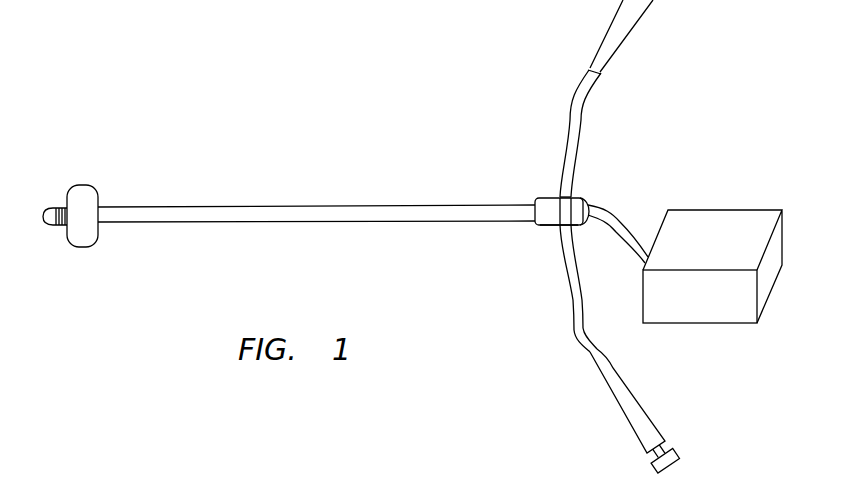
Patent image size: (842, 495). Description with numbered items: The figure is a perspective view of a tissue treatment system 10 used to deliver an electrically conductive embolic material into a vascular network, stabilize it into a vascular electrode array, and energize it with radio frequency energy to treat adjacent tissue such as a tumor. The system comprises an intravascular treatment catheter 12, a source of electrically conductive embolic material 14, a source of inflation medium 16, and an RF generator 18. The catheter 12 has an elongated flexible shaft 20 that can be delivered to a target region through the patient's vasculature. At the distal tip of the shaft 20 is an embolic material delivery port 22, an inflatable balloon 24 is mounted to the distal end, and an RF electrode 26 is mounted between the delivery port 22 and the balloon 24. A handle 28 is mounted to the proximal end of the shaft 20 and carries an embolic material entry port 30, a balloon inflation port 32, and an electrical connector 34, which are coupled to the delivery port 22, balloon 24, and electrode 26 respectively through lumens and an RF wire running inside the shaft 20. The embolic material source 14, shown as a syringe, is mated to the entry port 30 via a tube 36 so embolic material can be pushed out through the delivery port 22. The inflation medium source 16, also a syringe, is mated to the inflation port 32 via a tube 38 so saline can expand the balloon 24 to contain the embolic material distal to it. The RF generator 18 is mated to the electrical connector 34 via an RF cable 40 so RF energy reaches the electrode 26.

The tissue treatment system 10 is at (257, 133).
The intravascular treatment catheter 12 is at (316, 204).
The source of electrically conductive embolic material 14 is at (657, 440).
The source of inflation medium 16 is at (612, 43).
The radio frequency (RF) generator 18 is at (720, 222).
The elongated flexible shaft 20 is at (330, 222).
The embolic material delivery port 22 is at (47, 216).
The inflatable balloon 24 is at (83, 240).
The radio frequency (RF) electrode 26 is at (61, 208).
The handle 28 is at (545, 201).
The embolic material entry port 30 is at (560, 228).
The balloon inflation port 32 is at (563, 197).
The electrical connector 34 is at (591, 200).
The tube 36 is at (573, 314).
The tube 38 is at (581, 115).
The RF cable 40 is at (636, 232).